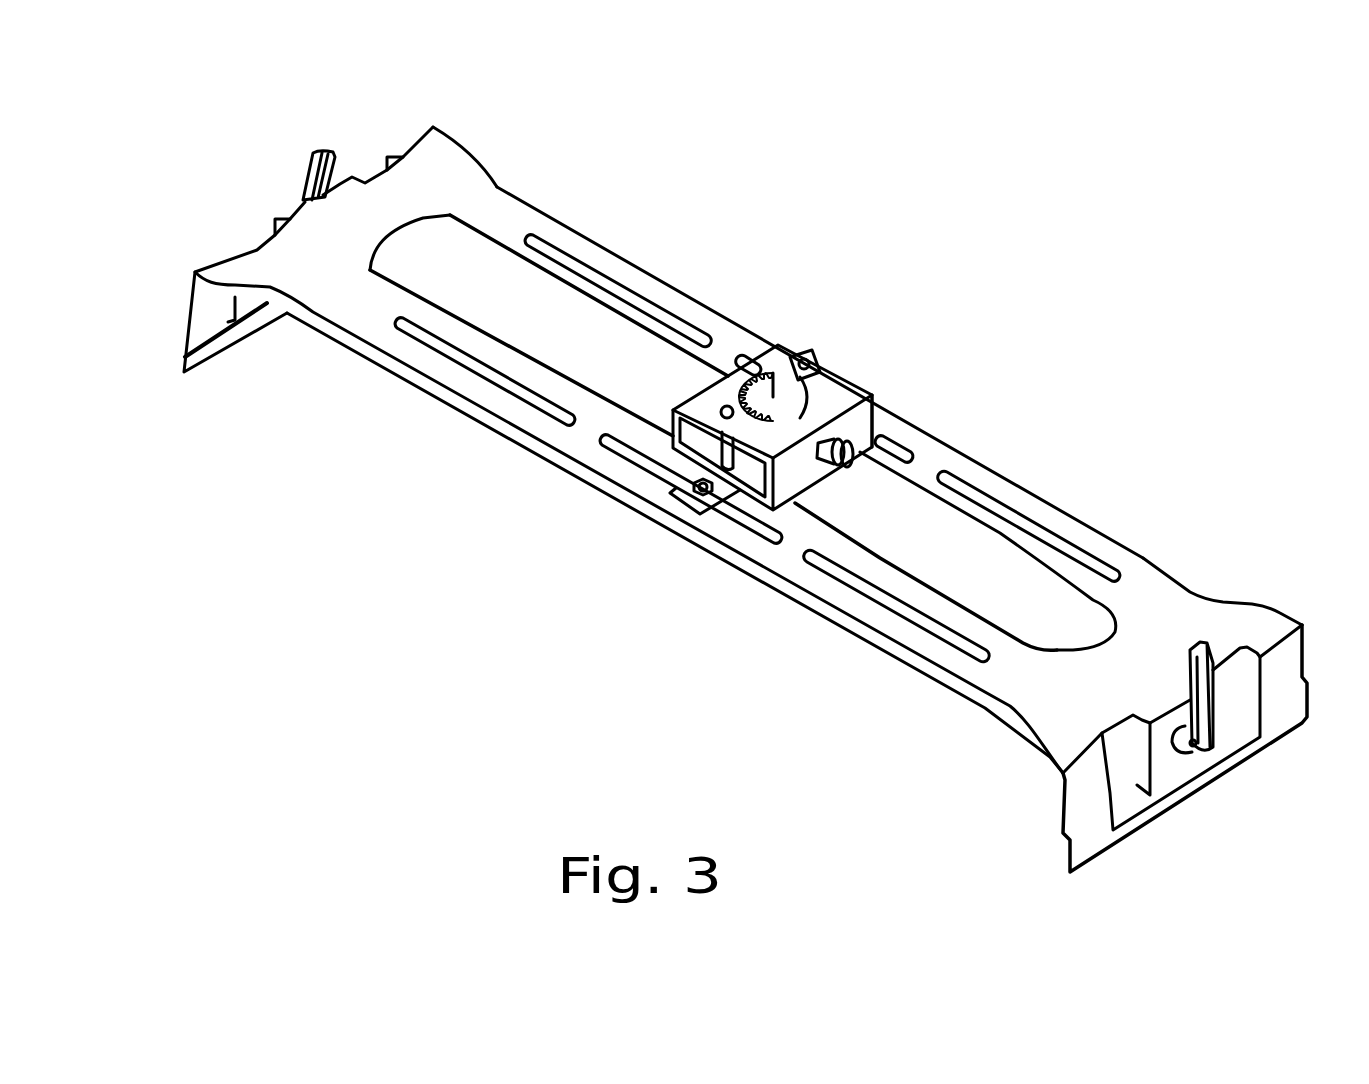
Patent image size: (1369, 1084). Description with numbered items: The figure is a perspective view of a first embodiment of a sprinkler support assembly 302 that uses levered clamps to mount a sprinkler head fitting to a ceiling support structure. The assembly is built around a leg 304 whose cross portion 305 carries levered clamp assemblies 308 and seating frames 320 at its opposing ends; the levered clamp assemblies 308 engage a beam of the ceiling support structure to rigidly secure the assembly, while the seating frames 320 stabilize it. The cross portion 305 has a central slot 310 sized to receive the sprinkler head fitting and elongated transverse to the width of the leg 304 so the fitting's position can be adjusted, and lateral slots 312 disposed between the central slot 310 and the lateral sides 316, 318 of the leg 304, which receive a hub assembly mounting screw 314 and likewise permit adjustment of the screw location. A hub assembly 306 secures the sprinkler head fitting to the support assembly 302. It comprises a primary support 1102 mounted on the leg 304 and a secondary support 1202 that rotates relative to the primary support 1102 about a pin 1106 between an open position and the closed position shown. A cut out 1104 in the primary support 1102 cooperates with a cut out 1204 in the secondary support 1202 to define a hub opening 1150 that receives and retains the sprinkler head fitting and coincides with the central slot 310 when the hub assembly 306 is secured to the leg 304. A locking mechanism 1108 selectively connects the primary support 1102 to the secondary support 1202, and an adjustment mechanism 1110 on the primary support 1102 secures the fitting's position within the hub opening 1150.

The sprinkler support assembly 302 is at (749, 339).
The leg 304 is at (766, 450).
The cross portion 305 is at (1153, 607).
The hub assembly 306 is at (888, 378).
The levered clamp assemblies 308 is at (283, 186).
The central slot 310 is at (613, 370).
The lateral slots 312 is at (473, 360).
The hub assembly mounting screw 314 is at (698, 493).
The lateral side 316 is at (1038, 500).
The lateral side 318 is at (982, 700).
The seating frames 320 is at (182, 352).
The primary support 1102 is at (863, 423).
The cut out 1104 is at (832, 372).
The pin 1106 is at (823, 366).
The locking mechanism 1108 is at (727, 412).
The adjustment mechanism 1110 is at (847, 470).
The hub opening 1150 is at (790, 365).
The secondary support 1202 is at (700, 397).
The cut out 1204 is at (742, 385).